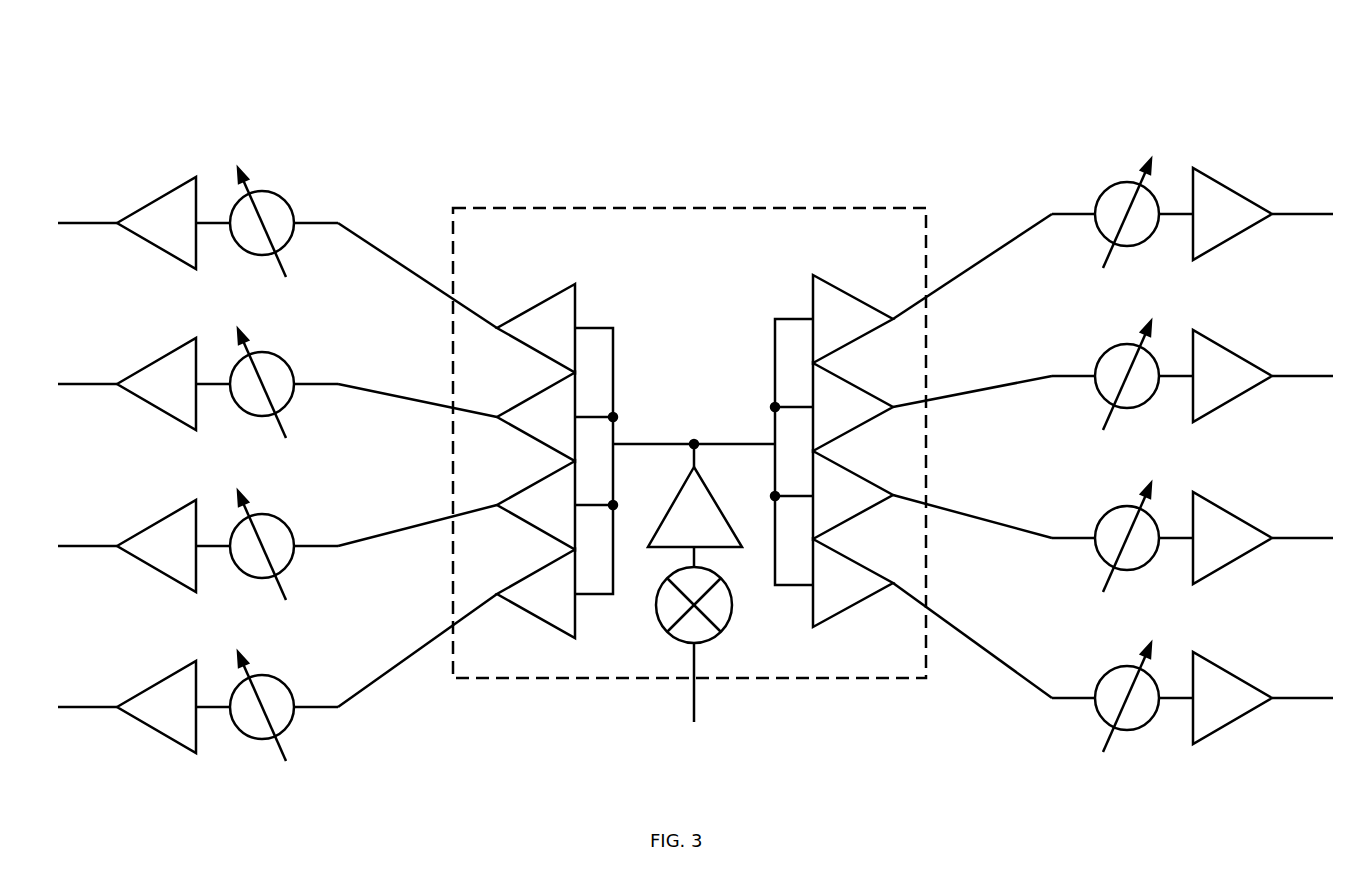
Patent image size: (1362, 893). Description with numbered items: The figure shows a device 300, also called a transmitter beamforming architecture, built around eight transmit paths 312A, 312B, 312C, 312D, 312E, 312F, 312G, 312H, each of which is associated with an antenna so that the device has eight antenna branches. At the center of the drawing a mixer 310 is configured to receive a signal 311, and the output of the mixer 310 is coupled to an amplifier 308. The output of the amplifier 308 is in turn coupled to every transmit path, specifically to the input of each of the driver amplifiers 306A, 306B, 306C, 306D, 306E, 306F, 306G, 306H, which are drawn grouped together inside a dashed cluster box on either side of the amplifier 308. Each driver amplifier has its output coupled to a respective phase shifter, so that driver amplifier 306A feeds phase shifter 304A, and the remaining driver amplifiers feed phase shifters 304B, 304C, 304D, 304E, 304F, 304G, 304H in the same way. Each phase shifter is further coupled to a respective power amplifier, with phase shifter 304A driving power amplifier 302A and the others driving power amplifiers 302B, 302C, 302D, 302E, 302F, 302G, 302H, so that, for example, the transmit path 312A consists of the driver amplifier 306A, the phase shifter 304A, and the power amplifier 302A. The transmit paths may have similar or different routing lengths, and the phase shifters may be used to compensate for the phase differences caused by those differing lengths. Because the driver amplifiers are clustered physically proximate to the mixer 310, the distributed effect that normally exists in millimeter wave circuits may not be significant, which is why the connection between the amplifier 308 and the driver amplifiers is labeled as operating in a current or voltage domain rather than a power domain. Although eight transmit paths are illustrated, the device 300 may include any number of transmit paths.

The device 300 is at (689, 360).
The power amplifier 302A is at (161, 199).
The power amplifier 302B is at (161, 360).
The power amplifier 302C is at (161, 522).
The power amplifier 302D is at (161, 683).
The power amplifier 302E is at (1229, 188).
The power amplifier 302F is at (1229, 350).
The power amplifier 302G is at (1229, 512).
The power amplifier 302H is at (1229, 672).
The phase shifter 304A is at (263, 190).
The phase shifter 304B is at (263, 351).
The phase shifter 304C is at (263, 513).
The phase shifter 304D is at (263, 674).
The phase shifter 304E is at (1127, 181).
The phase shifter 304F is at (1127, 343).
The phase shifter 304G is at (1127, 505).
The phase shifter 304H is at (1127, 665).
The driver amplifier 306A is at (540, 352).
The driver amplifier 306B is at (540, 441).
The driver amplifier 306C is at (540, 529).
The driver amplifier 306D is at (540, 618).
The driver amplifier 306E is at (846, 345).
The driver amplifier 306F is at (849, 432).
The driver amplifier 306G is at (849, 520).
The driver amplifier 306H is at (849, 607).
The amplifier 308 is at (706, 485).
The mixer 310 is at (721, 632).
The signal 311 is at (697, 697).
The transmit path 312A is at (417, 234).
The transmit path 312B is at (417, 354).
The transmit path 312C is at (417, 496).
The transmit path 312D is at (417, 632).
The transmit path 312E is at (972, 228).
The transmit path 312F is at (974, 346).
The transmit path 312G is at (975, 484).
The transmit path 312H is at (974, 635).